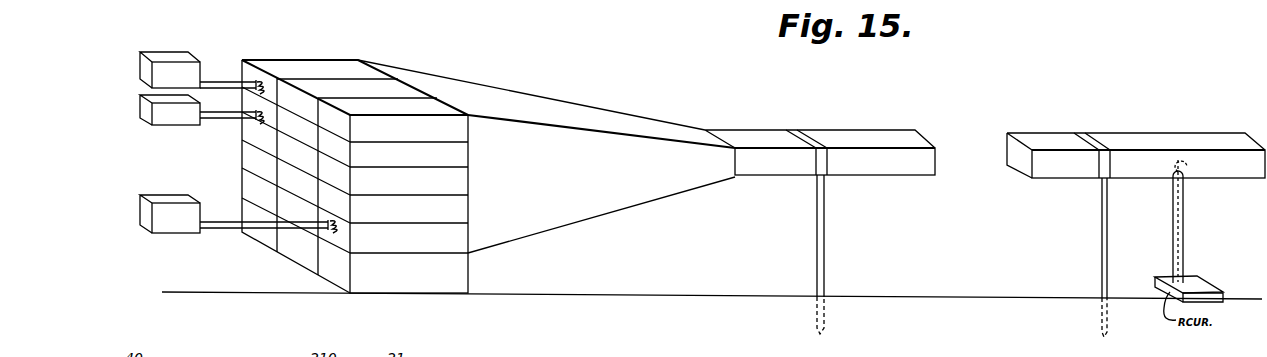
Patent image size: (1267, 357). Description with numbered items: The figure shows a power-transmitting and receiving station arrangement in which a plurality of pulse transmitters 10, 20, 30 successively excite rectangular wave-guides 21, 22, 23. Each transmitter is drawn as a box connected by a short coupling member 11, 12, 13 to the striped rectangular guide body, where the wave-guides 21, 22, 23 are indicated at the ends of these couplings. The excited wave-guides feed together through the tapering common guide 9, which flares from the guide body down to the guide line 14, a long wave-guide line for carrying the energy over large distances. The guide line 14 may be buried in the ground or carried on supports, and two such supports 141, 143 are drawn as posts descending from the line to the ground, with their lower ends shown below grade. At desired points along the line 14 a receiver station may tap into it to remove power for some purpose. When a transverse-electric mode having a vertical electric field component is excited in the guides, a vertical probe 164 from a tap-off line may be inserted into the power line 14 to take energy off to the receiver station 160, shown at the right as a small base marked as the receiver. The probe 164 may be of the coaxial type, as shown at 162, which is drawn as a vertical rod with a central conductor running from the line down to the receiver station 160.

The tapering common guide 9 is at (553, 224).
The pulse transmitter 10 is at (160, 52).
The rod 11 is at (213, 82).
The rod 12 is at (224, 116).
The rod 13 is at (222, 226).
The guide line 14 is at (770, 168).
The pulse transmitter 20 is at (145, 115).
The rectangular wave-guide 21 is at (252, 72).
The rectangular wave-guide 22 is at (246, 100).
The rectangular wave-guide 23 is at (343, 240).
The pulse transmitter 30 is at (171, 198).
The support 141 is at (827, 239).
The support 143 is at (1101, 231).
The receiver station 160 is at (1208, 288).
The coaxial type probe 162 is at (1185, 241).
The vertical probe 164 is at (1188, 163).